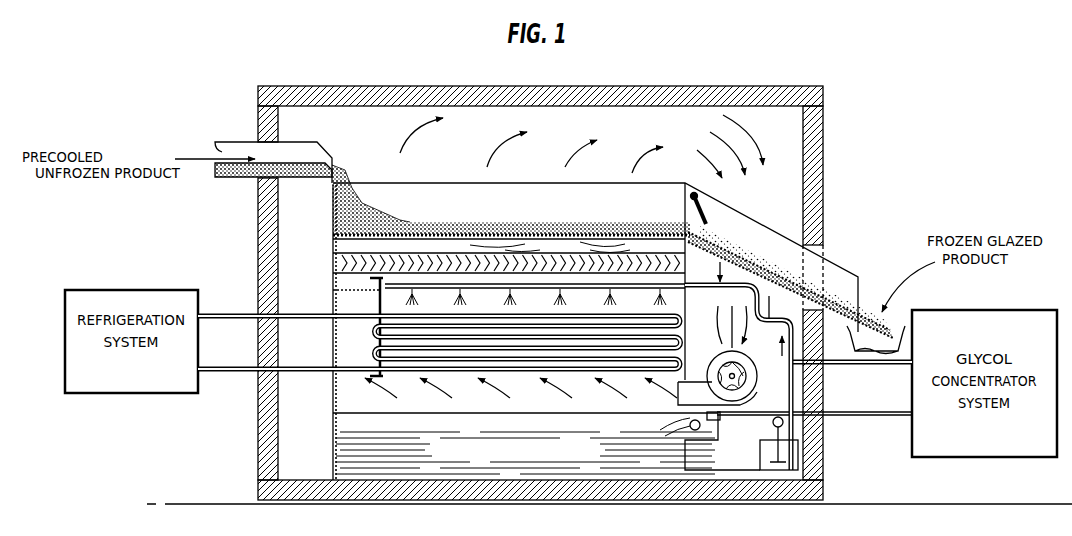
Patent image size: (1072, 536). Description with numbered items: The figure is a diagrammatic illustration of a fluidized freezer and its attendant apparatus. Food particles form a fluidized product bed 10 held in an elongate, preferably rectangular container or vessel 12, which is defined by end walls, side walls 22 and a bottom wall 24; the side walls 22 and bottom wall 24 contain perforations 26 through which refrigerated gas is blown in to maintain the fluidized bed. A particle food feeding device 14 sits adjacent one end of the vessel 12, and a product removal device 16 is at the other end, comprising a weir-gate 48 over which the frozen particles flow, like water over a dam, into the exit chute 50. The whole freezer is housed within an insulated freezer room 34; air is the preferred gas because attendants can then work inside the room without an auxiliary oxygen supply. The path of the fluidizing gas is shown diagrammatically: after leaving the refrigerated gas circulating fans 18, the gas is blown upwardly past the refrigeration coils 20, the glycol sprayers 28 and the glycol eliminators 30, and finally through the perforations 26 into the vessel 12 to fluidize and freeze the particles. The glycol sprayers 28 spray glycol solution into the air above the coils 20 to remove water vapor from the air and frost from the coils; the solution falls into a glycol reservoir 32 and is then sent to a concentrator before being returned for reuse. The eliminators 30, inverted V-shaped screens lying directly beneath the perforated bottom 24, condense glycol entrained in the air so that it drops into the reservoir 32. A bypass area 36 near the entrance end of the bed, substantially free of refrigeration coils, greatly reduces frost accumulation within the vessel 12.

The fluidized product bed 10 is at (530, 180).
The container or vessel 12 is at (332, 206).
The particle food feeding device 14 is at (232, 181).
The product removal device 16 is at (766, 222).
The refrigerated gas circulating fans 18 is at (748, 388).
The refrigeration coils 20 is at (373, 352).
The side walls 22 is at (597, 192).
The bottom wall 24 is at (396, 240).
The perforations 26 is at (578, 243).
The glycol sprayers 28 is at (556, 293).
The glycol eliminators 30 is at (340, 264).
The glycol reservoir 32 is at (333, 440).
The insulated freezer room 34 is at (780, 148).
The bypass area 36 is at (333, 330).
The weir-gate 48 is at (702, 216).
The exit chute 50 is at (836, 278).